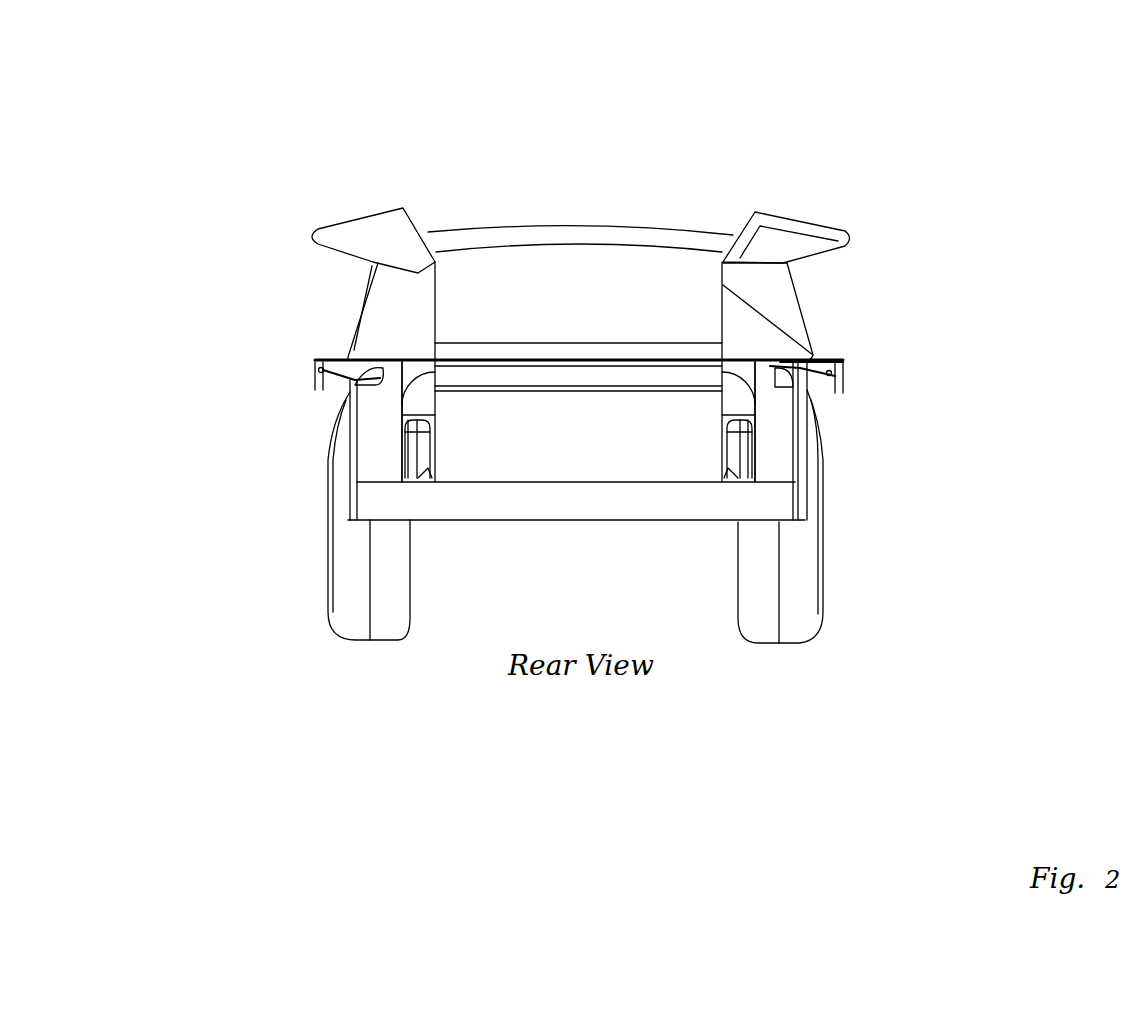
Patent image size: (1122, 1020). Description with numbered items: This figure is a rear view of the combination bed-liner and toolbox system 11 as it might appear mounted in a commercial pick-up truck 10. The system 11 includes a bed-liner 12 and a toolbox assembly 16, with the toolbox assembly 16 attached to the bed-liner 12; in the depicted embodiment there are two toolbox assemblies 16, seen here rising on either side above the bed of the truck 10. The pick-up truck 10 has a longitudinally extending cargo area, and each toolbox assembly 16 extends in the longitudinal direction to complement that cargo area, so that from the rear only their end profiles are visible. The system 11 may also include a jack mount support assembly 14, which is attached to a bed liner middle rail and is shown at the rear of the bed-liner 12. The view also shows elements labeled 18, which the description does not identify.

The pick-up truck 10 is at (517, 503).
The combination bed-liner and toolbox system 11 is at (616, 263).
The bed-liner 12 is at (510, 423).
The jack mount support assembly 14 is at (317, 372).
The toolbox assembly 16 is at (400, 320).
The wind deflector fin 18 is at (385, 248).